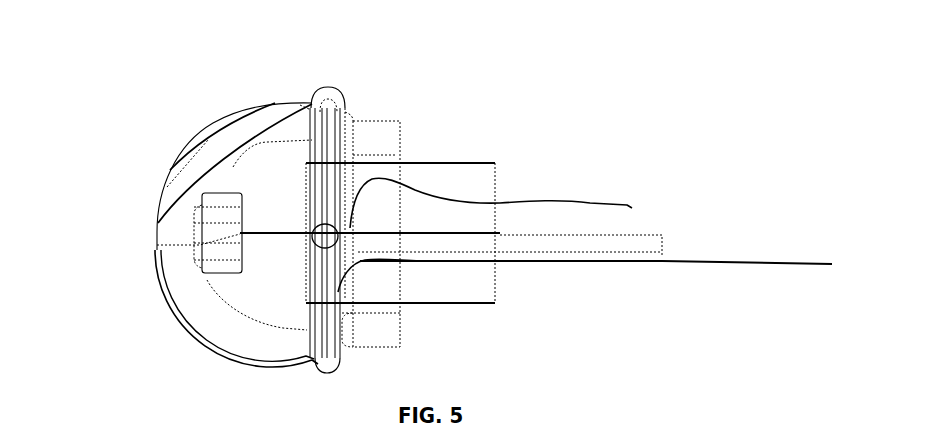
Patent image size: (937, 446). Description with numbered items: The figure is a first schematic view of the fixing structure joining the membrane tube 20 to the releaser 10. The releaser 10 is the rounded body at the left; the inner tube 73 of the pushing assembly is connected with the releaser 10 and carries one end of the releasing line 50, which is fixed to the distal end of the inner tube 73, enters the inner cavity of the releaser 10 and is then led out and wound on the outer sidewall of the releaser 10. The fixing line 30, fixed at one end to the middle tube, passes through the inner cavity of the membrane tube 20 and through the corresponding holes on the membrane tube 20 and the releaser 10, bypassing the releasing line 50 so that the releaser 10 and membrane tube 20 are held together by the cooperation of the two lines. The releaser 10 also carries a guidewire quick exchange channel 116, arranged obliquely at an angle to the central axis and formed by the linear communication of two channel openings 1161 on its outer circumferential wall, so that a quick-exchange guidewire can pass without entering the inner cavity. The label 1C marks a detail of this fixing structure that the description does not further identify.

The releaser 10 is at (252, 108).
The guidewire quick exchange channel 116 is at (207, 143).
The channel opening 1161 is at (163, 192).
The releasing line 50 is at (348, 106).
The membrane tube 20 is at (455, 158).
The inner tube 73 is at (643, 232).
The fixing line 30 is at (500, 235).
The conductor 1C is at (305, 258).